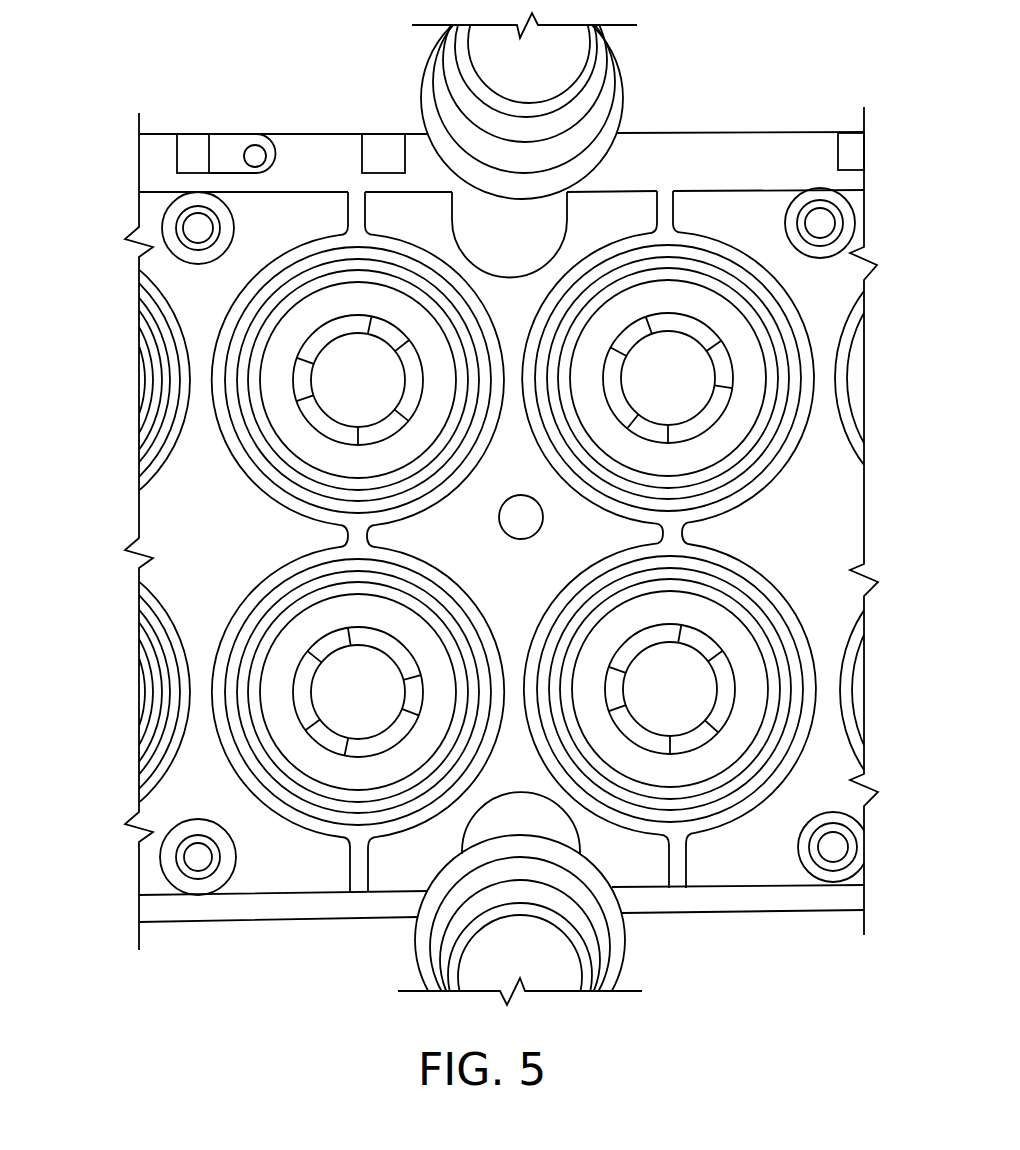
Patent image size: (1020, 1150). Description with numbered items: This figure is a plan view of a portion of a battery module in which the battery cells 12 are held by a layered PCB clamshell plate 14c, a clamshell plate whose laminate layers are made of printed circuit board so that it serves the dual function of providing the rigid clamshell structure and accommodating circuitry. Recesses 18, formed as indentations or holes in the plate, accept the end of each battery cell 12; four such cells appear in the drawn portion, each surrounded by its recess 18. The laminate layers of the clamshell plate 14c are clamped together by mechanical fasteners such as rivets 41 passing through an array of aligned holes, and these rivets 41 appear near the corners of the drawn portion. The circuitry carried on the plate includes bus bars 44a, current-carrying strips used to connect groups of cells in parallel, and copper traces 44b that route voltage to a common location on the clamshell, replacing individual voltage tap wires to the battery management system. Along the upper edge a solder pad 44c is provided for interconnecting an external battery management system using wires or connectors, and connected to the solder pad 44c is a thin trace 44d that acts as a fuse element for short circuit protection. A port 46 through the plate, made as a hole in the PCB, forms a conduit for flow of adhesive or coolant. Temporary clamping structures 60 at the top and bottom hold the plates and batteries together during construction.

The battery cell 12 is at (735, 425).
The recess 18 is at (752, 475).
The layered PCB clamshell plate 14c is at (138, 180).
The rivet 41 is at (822, 223).
The bus bar 44a is at (812, 283).
The copper trace 44b is at (850, 177).
The solder pad 44c is at (227, 157).
The thin trace 44d is at (197, 167).
The port 46 is at (500, 522).
The temporary clamping structure 60 is at (535, 63).